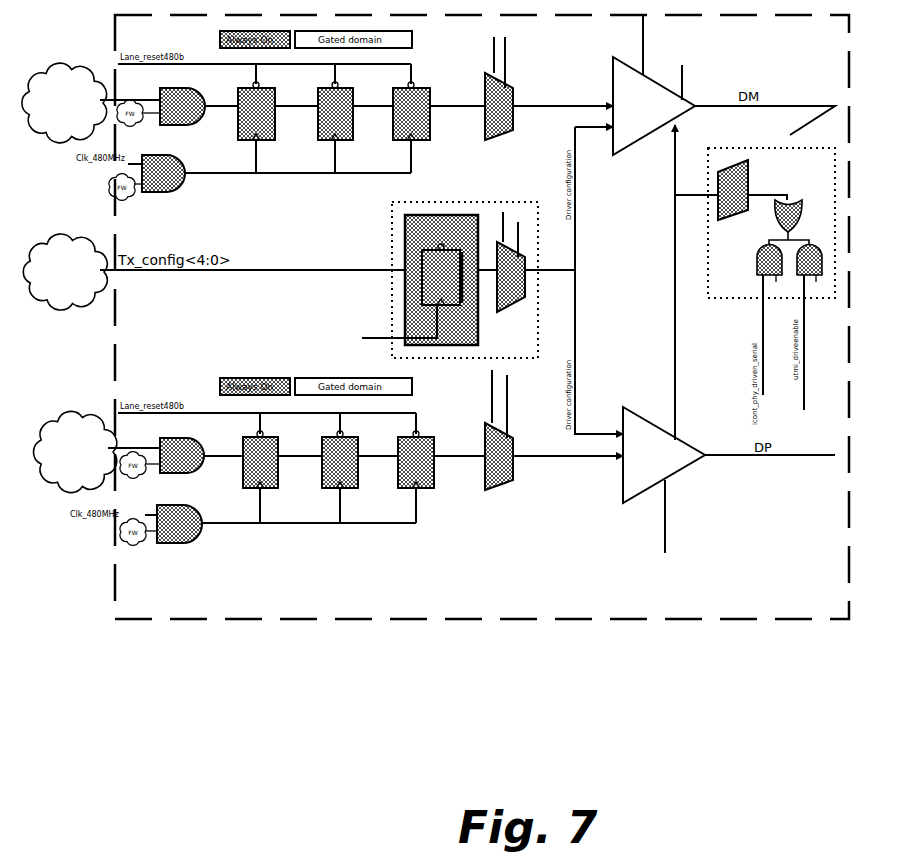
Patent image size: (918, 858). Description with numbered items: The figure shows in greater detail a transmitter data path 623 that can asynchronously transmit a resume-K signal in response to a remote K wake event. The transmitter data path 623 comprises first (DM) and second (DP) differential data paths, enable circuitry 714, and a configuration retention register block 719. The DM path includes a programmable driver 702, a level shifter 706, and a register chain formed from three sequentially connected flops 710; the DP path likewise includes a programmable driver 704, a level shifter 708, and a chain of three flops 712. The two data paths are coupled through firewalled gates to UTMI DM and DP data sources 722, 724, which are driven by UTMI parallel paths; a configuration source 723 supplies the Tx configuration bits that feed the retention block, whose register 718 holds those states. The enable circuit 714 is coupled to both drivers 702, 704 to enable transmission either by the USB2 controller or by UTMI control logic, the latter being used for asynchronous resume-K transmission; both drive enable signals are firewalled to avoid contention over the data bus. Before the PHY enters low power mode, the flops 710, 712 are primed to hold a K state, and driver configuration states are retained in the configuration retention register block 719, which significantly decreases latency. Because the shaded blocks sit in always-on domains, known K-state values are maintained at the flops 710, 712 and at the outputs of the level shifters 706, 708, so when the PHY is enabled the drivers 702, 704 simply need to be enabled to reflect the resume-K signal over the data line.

The transmitter data path 623 is at (482, 317).
The programmable driver 702 is at (654, 85).
The programmable driver 704 is at (664, 486).
The level shifter 706 is at (515, 90).
The level shifter 708 is at (504, 484).
The flops 710 is at (240, 135).
The flops 712 is at (244, 483).
The enable circuitry 714 is at (771, 279).
The configuration flip-flop 718 is at (442, 268).
The configuration retention register block 719 is at (450, 280).
The UTMI DM data source 722 is at (64, 103).
The configuration 723 is at (65, 272).
The UTMI DP data source 724 is at (74, 451).